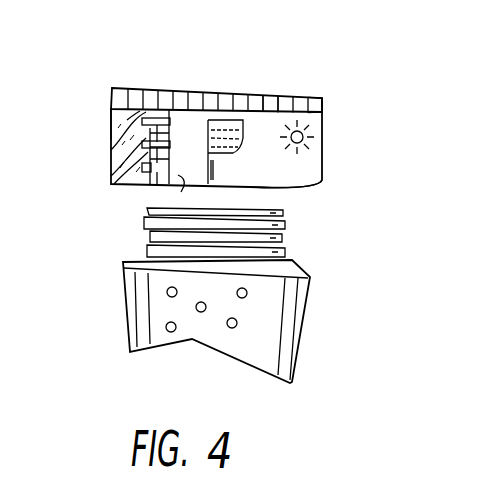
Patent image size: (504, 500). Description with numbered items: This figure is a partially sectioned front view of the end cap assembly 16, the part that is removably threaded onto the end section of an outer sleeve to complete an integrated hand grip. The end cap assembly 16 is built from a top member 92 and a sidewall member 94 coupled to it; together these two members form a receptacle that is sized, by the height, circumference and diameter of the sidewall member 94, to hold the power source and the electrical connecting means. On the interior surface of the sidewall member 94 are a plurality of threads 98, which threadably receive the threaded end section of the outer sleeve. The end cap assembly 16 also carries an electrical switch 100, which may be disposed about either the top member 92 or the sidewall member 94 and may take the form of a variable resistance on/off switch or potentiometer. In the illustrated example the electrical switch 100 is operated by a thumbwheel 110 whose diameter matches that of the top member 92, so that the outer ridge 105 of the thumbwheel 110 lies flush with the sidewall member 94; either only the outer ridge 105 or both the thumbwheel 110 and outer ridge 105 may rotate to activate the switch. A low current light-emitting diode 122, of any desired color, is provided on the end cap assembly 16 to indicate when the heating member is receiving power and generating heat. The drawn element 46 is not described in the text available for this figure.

The end cap assembly 16 is at (323, 146).
The circuit board assembly 46 is at (181, 192).
The top member 92 is at (322, 113).
The sidewall member 94 is at (297, 174).
The threads 98 is at (112, 167).
The electrical switch 100 is at (112, 97).
The outer ridge 105 is at (273, 109).
The thumbwheel 110 is at (153, 89).
The light-emitting diode 122 is at (316, 125).